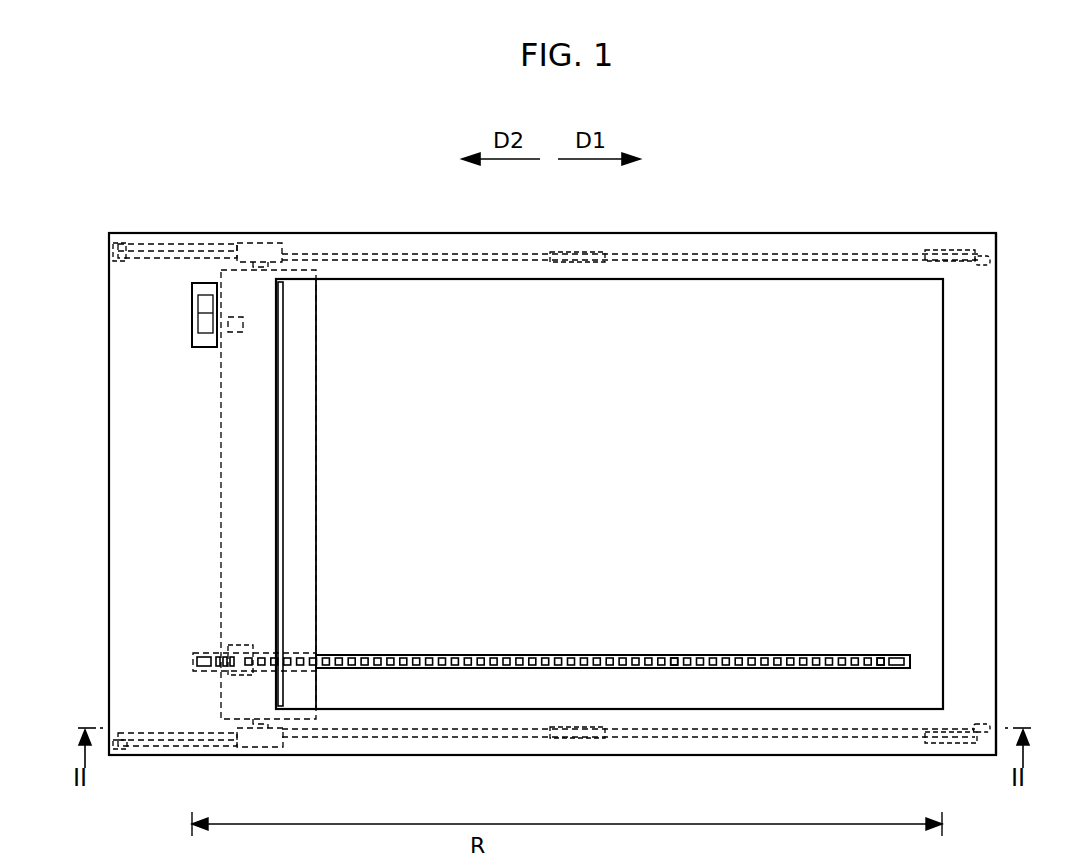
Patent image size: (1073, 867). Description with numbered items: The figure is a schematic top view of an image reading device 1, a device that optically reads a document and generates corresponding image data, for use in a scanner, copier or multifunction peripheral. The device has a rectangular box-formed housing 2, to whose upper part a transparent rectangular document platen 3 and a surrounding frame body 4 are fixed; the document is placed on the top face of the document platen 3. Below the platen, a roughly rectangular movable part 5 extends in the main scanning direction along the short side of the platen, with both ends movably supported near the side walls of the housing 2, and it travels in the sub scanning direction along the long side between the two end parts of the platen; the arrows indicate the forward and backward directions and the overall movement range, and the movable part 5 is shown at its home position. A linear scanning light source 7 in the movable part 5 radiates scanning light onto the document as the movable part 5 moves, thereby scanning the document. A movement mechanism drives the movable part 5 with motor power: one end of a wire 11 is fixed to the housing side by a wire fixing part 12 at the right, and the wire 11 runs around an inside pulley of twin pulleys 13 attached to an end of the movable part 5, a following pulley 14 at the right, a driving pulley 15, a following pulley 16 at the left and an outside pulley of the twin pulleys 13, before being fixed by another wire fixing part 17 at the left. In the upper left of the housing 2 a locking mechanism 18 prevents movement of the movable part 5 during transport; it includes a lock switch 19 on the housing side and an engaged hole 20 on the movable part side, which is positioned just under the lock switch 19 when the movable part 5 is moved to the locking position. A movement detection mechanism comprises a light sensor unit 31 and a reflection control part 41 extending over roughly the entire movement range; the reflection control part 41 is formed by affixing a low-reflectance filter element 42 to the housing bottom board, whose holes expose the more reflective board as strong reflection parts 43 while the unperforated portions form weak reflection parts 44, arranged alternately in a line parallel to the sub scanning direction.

The image reading device 1 is at (918, 158).
The housing 2 is at (818, 233).
The document platen 3 is at (910, 446).
The frame body 4 is at (968, 541).
The movable part 5 is at (318, 385).
The scanning light source 7 is at (284, 318).
The wire 11 is at (742, 254).
The wire fixing part 12 is at (990, 258).
The twin pulleys 13 is at (262, 243).
The following pulley 14 is at (950, 250).
The driving pulley 15 is at (573, 252).
The following pulley 16 is at (125, 252).
The wire fixing part 17 is at (118, 243).
The locking mechanism 18 is at (200, 325).
The lock switch 19 is at (205, 303).
The engaged hole 20 is at (235, 333).
The light sensor unit 31 is at (240, 645).
The reflection control part 41 is at (857, 655).
The filter element 42 is at (672, 668).
The strong reflection part 43 is at (897, 667).
The weak reflection part 44 is at (883, 668).